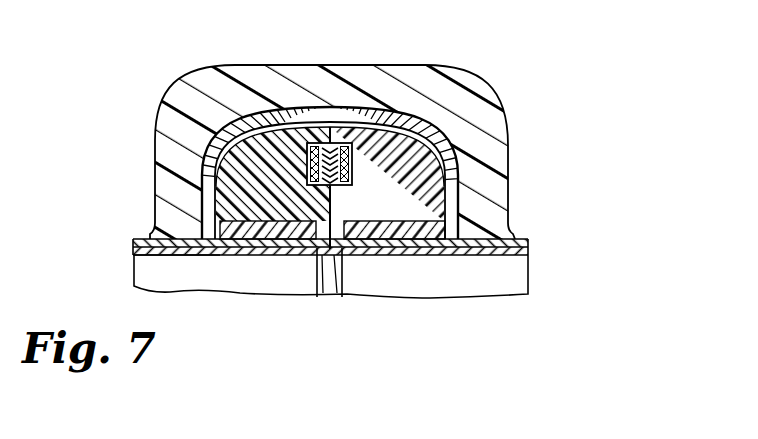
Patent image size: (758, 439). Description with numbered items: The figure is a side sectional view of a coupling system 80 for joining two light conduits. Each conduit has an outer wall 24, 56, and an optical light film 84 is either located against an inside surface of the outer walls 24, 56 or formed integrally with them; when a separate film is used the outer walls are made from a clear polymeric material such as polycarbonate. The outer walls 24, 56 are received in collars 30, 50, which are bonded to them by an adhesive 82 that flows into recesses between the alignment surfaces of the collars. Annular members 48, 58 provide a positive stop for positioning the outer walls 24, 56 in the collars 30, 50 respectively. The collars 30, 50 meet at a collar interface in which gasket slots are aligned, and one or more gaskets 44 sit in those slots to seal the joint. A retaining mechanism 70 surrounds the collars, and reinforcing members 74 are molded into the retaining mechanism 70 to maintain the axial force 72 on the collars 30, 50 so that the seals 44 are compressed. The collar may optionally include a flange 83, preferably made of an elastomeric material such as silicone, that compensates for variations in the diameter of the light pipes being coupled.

The coupling system 80 is at (319, 133).
The retaining mechanism 70 is at (414, 73).
The collar 50 is at (433, 133).
The reinforcing members 74 is at (295, 117).
The collar 30 is at (262, 143).
The gasket 44 is at (338, 143).
The axial force 72 is at (135, 182).
The adhesive 82 is at (243, 239).
The flange 83 is at (154, 237).
The outer wall 24 is at (133, 250).
The outer wall 56 is at (518, 242).
The optical light film 84 is at (170, 256).
The annular member 48 is at (317, 297).
The annular member 58 is at (342, 297).